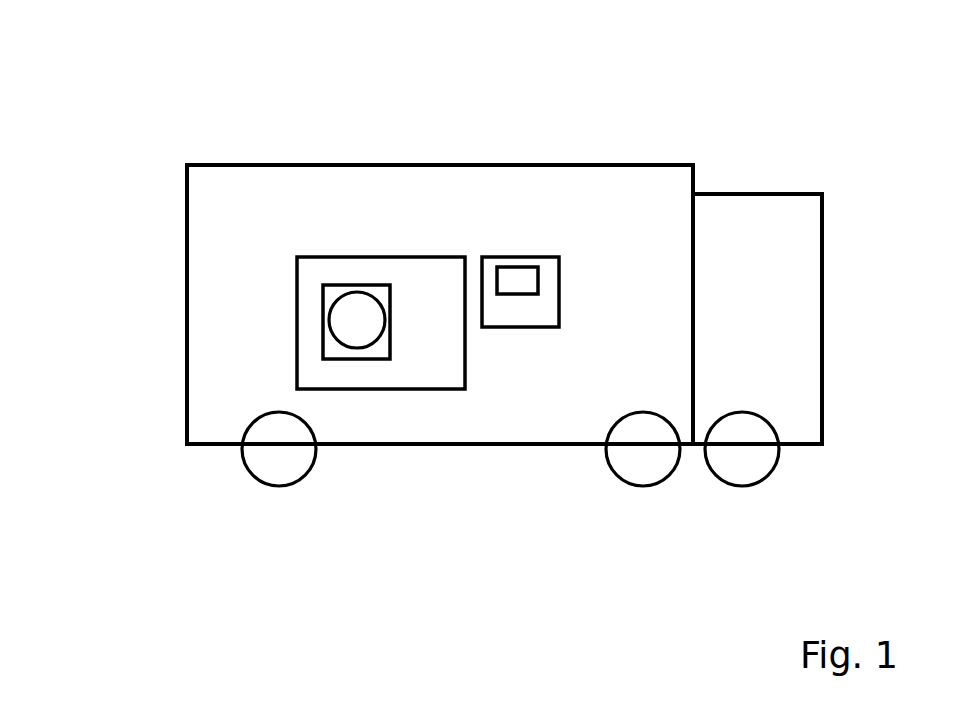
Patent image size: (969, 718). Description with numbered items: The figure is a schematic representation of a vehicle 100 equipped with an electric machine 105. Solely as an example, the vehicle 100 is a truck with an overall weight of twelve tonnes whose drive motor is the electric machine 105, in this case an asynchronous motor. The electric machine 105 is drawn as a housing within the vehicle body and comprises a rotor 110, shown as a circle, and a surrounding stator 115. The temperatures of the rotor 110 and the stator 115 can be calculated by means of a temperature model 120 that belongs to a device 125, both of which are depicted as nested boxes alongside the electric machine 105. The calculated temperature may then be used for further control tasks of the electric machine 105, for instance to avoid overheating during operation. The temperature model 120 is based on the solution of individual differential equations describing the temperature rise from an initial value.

The vehicle 100 is at (598, 165).
The electric machine 105 is at (335, 257).
The rotor 110 is at (335, 306).
The stator 115 is at (373, 359).
The temperature model 120 is at (518, 267).
The device 125 is at (520, 327).